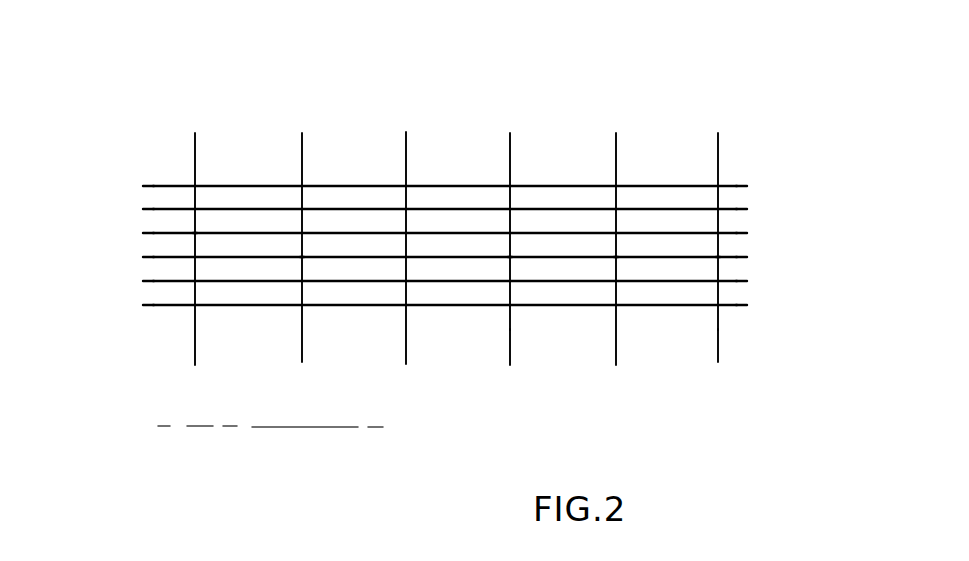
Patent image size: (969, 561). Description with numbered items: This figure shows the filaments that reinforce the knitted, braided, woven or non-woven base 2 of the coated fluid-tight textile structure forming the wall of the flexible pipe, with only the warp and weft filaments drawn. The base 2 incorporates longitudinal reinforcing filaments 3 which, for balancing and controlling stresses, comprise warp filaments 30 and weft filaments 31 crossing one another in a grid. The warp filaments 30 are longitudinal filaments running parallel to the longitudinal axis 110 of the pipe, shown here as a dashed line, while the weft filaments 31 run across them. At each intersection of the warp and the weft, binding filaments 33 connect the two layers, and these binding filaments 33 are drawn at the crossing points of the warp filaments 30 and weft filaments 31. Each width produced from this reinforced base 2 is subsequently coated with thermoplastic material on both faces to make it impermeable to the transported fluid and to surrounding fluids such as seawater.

The knitted, braided, woven or non-woven base 2 is at (565, 137).
The reinforcing filaments 3 is at (439, 207).
The warp filaments 30 is at (148, 259).
The weft filaments 31 is at (510, 335).
The binding filaments 33 is at (302, 257).
The longitudinal axis 110 is at (288, 428).